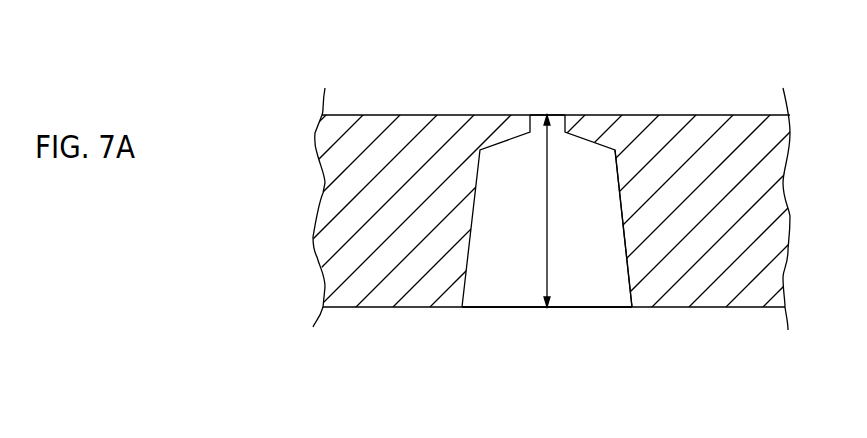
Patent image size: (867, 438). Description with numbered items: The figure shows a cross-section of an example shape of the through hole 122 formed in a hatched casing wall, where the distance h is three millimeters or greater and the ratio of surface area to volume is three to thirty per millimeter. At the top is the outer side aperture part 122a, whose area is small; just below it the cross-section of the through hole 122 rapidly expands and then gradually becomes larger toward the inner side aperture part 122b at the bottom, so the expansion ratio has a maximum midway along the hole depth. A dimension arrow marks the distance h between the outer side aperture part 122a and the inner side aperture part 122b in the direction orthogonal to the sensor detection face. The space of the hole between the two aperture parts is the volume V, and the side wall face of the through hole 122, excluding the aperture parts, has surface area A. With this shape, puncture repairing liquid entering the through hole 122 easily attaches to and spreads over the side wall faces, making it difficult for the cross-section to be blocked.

The through hole 122 is at (522, 180).
The outer side aperture part 122a is at (560, 115).
The inner side aperture part 122b is at (540, 307).
The distance between outer side aperture part and inner side aperture part h is at (554, 211).
The volume of the through hole V is at (497, 290).
The surface area of the side wall face A is at (622, 213).